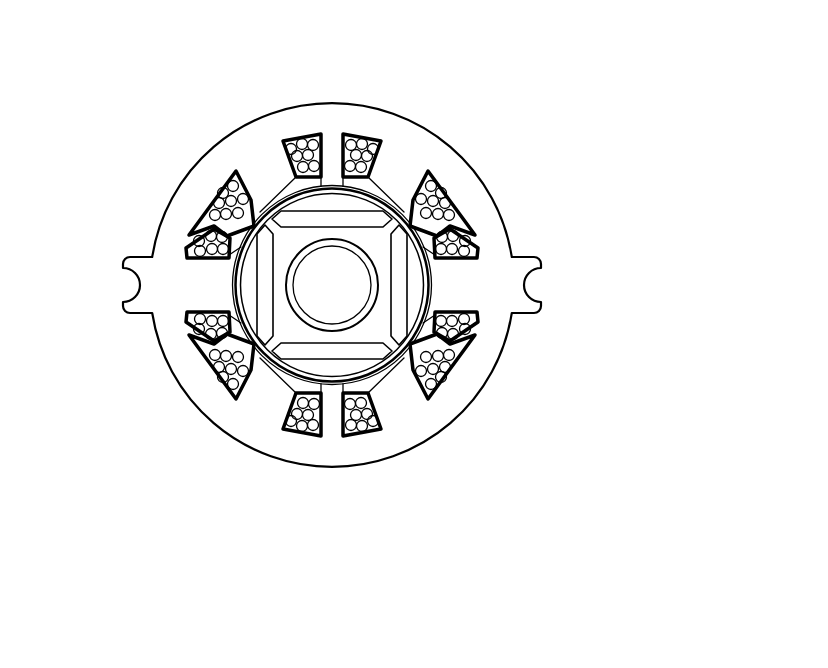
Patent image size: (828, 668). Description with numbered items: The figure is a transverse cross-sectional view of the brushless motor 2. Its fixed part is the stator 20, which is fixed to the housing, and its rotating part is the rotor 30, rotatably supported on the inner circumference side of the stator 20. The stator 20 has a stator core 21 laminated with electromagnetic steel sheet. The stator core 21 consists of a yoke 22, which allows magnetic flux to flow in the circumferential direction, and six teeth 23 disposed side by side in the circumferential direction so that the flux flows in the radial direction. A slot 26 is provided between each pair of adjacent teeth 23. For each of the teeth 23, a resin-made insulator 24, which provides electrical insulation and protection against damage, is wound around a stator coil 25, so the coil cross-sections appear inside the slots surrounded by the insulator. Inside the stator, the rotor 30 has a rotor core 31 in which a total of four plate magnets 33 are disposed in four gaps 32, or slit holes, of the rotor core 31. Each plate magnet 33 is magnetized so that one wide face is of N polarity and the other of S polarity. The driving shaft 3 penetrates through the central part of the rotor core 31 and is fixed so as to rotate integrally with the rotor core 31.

The brushless motor 2 is at (238, 122).
The driving shaft 3 is at (455, 374).
The stator 20 is at (323, 102).
The stator core 21 is at (377, 120).
The yoke 22 is at (203, 178).
The teeth 23 is at (388, 178).
The insulator 24 is at (343, 134).
The stator coil 25 is at (448, 187).
The slot 26 is at (455, 215).
The rotor 30 is at (373, 373).
The rotor core 31 is at (333, 292).
The gaps (slit holes) 32 is at (268, 362).
The plate magnet 33 is at (397, 292).